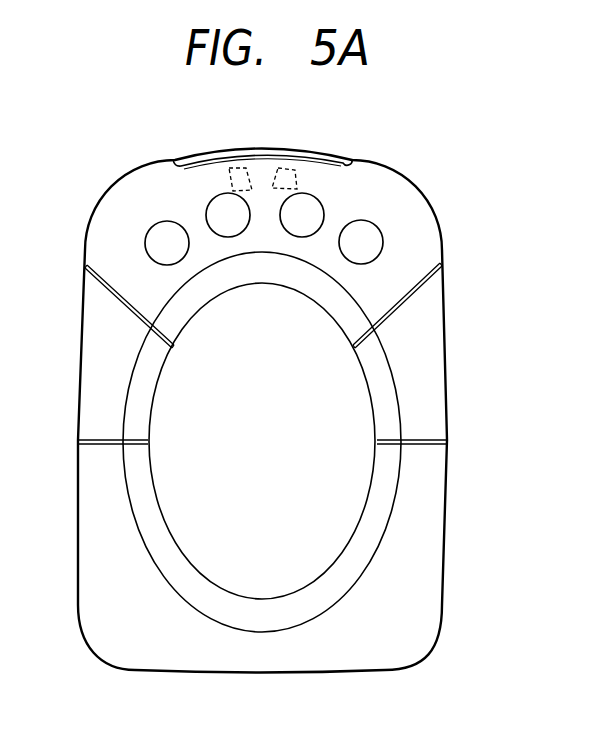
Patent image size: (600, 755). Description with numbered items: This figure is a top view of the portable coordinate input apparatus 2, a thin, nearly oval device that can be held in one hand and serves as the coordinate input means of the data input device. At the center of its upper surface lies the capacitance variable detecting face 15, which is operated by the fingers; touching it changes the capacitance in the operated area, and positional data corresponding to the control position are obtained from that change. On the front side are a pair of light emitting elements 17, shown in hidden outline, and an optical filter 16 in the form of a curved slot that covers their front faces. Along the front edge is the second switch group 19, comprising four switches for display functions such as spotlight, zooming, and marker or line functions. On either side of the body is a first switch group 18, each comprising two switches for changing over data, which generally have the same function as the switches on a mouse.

The portable coordinate input apparatus 2 is at (455, 418).
The capacitance variable detecting face 15 is at (257, 582).
The optical filter 16 is at (328, 150).
The light emitting elements 17 is at (287, 165).
The first switch group 18 is at (97, 355).
The second switch group 19 is at (163, 232).